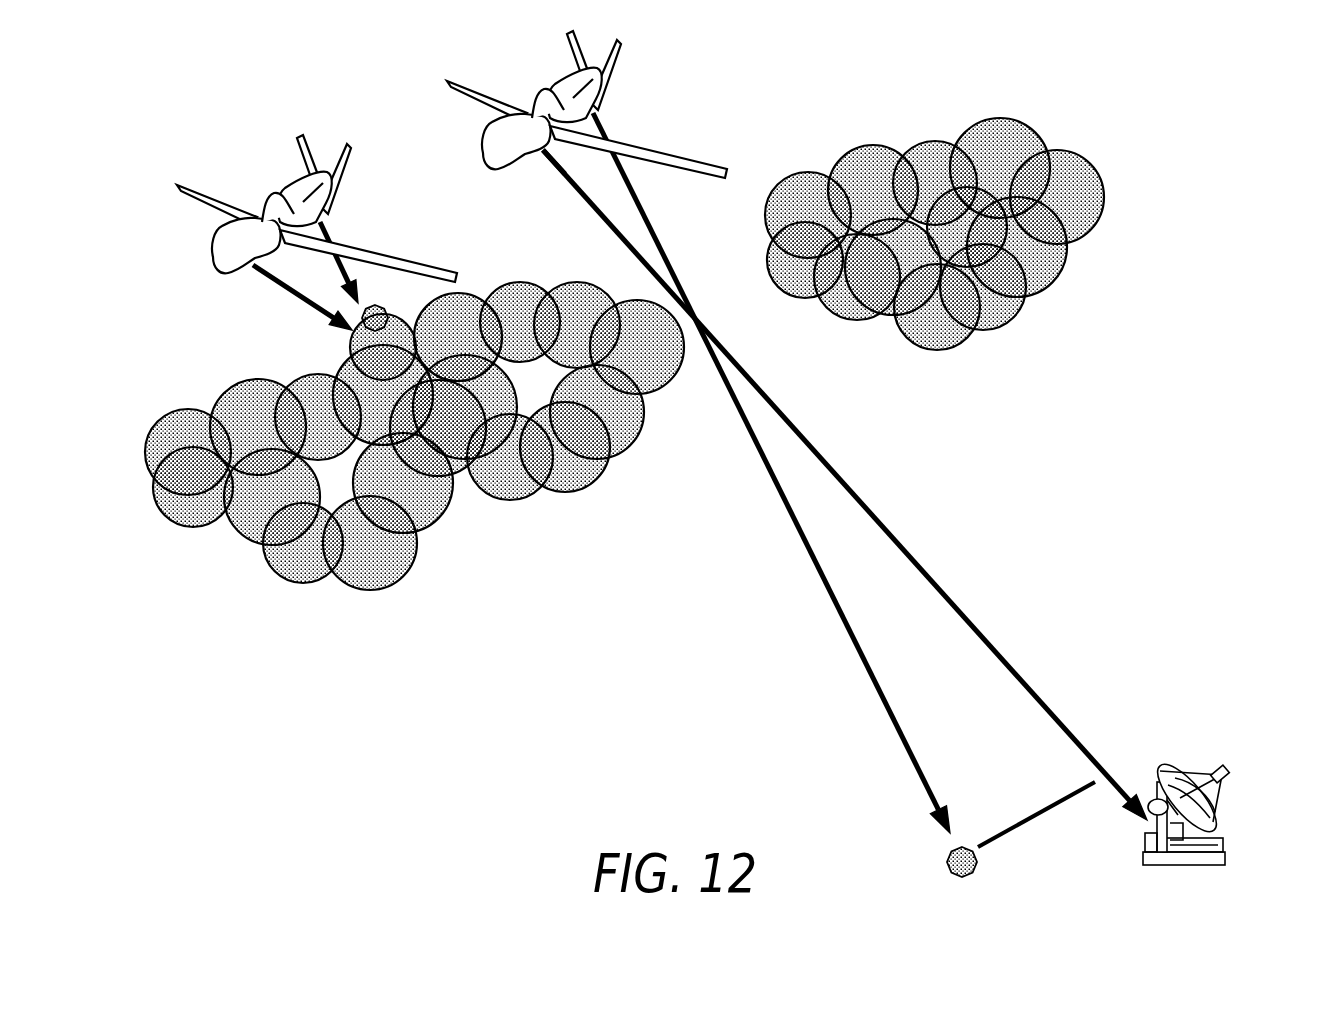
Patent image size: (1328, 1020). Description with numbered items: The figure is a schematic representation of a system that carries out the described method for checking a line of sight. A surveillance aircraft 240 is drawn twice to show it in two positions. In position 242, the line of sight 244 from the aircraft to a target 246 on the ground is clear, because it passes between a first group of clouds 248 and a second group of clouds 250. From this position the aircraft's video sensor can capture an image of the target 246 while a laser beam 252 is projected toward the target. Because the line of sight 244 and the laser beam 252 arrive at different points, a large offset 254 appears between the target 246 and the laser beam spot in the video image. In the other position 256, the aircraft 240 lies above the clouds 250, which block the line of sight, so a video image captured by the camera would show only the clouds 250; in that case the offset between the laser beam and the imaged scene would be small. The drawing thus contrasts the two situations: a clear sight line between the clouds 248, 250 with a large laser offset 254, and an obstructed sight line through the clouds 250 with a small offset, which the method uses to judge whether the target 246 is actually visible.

The surveillance aircraft 240 is at (215, 232).
The position 242 is at (543, 157).
The line of sight 244 is at (900, 543).
The target 246 is at (1228, 855).
The clouds 248 is at (1000, 327).
The clouds 250 is at (383, 553).
The laser beam 252 is at (820, 587).
The offset 254 is at (1028, 820).
The position 256 is at (248, 262).